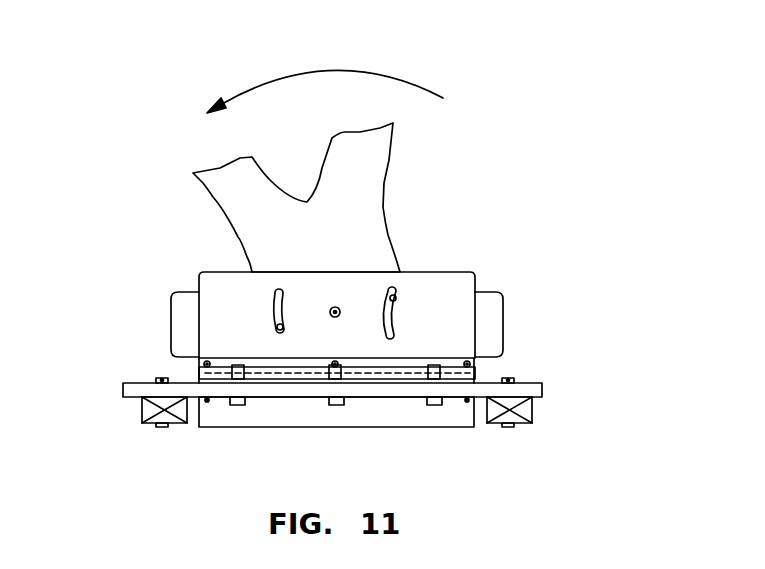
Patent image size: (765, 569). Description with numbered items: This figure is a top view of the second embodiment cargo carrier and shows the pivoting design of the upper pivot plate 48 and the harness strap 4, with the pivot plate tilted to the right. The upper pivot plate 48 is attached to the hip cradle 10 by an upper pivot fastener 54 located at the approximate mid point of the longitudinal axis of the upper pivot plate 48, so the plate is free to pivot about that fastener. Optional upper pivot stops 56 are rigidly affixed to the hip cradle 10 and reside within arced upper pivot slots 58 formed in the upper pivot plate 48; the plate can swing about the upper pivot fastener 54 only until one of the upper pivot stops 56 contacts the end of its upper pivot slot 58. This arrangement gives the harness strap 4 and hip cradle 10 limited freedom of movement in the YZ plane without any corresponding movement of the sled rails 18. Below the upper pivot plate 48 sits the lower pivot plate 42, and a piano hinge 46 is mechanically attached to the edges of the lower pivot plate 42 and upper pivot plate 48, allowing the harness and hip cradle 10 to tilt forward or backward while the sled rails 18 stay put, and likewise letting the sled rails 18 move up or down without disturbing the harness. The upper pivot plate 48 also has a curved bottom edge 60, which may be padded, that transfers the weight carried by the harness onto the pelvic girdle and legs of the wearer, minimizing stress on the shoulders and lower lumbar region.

The harness strap 4 is at (370, 170).
The hip cradle 10 is at (495, 317).
The sled rails 18 is at (535, 407).
The lower pivot plate 42 is at (475, 380).
The piano hinge 46 is at (203, 365).
The upper pivot plate 48 is at (455, 280).
The upper pivot fastener 54 is at (330, 308).
The upper pivot stops 56 is at (275, 327).
The upper pivot slots 58 is at (276, 302).
The curved bottom edge 60 is at (453, 412).